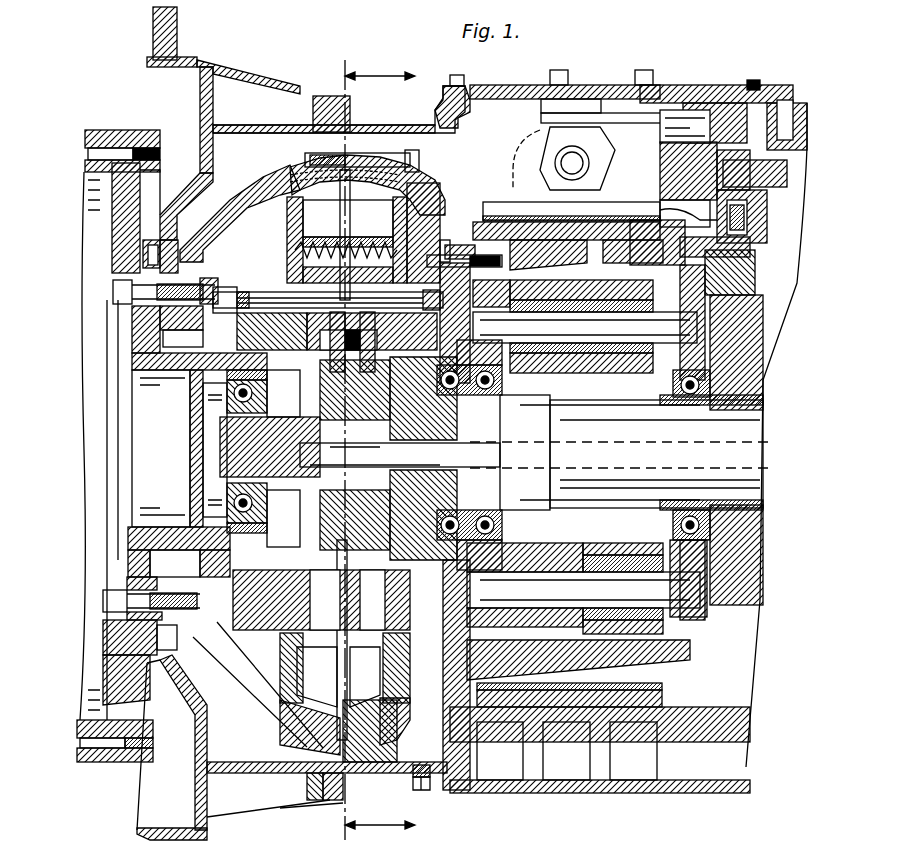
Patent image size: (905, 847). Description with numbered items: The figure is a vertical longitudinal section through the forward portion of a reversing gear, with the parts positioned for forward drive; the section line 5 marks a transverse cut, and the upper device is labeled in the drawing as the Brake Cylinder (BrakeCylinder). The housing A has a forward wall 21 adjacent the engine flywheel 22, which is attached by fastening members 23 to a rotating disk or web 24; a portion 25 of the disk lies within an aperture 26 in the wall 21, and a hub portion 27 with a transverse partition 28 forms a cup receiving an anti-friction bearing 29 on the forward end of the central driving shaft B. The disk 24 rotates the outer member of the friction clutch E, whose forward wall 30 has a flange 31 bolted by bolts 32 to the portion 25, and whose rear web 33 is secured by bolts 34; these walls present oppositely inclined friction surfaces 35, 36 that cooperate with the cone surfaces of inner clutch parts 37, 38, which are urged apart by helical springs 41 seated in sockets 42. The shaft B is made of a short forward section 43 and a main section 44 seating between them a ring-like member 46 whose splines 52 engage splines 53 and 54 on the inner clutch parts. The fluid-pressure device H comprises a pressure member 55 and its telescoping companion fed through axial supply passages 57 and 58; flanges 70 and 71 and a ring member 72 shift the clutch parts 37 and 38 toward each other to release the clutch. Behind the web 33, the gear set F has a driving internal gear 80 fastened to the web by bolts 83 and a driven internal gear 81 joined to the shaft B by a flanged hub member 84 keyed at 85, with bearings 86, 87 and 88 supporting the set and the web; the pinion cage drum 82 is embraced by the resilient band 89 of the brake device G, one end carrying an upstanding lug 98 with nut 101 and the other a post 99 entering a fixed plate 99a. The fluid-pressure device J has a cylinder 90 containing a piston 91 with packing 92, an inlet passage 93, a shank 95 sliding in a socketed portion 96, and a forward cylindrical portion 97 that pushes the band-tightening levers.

The forward wall 21 is at (200, 170).
The flywheel 22 is at (92, 136).
The fastening members 23 is at (110, 148).
The rotating disk or web 24 is at (120, 233).
The portion of disk 25 is at (150, 325).
The aperture 26 is at (172, 250).
The hub portion 27 is at (185, 375).
The transverse wall or partition 28 is at (192, 418).
The anti-friction bearing 29 is at (238, 503).
The forward wall of outer clutch member 30 is at (238, 205).
The flange 31 is at (148, 345).
The fastening bolts 32 is at (115, 290).
The rear wall or web 33 is at (450, 240).
The fastening bolts 34 is at (412, 155).
The friction surface 35 is at (318, 97).
The friction surface 36 is at (385, 150).
The inner clutch part 37 is at (292, 175).
The inner clutch part 38 is at (425, 192).
The helical springs 41 is at (320, 245).
The sockets 42 is at (295, 255).
The forward shaft section 43 is at (240, 450).
The main shaft section 44 is at (600, 452).
The ring-like member 46 is at (270, 630).
The splines 52 is at (317, 677).
The splines 53 is at (282, 640).
The splines 54 is at (358, 640).
The pressure member 55 is at (283, 518).
The axial supply passage 57 is at (445, 452).
The axial supply passage 58 is at (400, 453).
The flange 70 is at (270, 600).
The flange 71 is at (272, 612).
The ring member 72 is at (445, 583).
The driving gear 80 is at (520, 245).
The driven gear 81 is at (705, 256).
The external drum 82 is at (670, 678).
The bolts 83 is at (462, 245).
The flanged hub member 84 is at (760, 375).
The key 85 is at (763, 405).
The anti-friction bearing 86 is at (680, 385).
The anti-friction bearing 87 is at (507, 395).
The anti-friction bearing 88 is at (465, 395).
The resilient band 89 is at (660, 695).
The fluid-pressure cylinder 90 is at (780, 262).
The piston 91 is at (725, 118).
The packing material 92 is at (790, 285).
The inlet passage 93 is at (760, 83).
The shank 95 is at (785, 170).
The socketed portion 96 is at (790, 190).
The cylindrical portion 97 is at (680, 150).
The upstanding lug 98 is at (510, 200).
The post 99 is at (573, 100).
The fixed plate 99a is at (607, 98).
The nut 101 is at (555, 155).
The section line 5 is at (380, 446).
The housing A is at (435, 105).
The central driving shaft B is at (750, 430).
The friction clutch E is at (287, 232).
The gear set F is at (745, 268).
The brake band device G is at (516, 160).
The fluid-pressure device H is at (283, 392).
The fluid-pressure device J is at (762, 225).
The brake cylinder BrakeCylinder is at (730, 100).